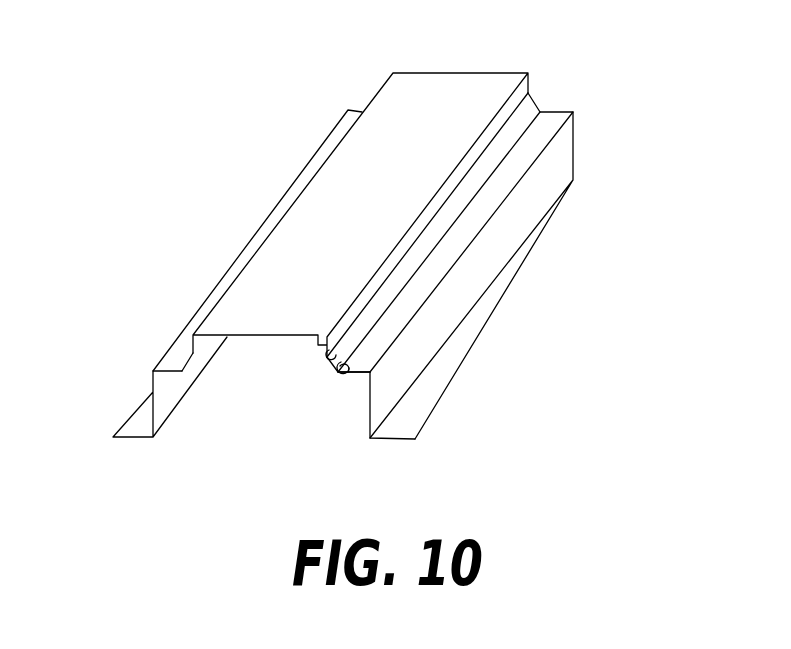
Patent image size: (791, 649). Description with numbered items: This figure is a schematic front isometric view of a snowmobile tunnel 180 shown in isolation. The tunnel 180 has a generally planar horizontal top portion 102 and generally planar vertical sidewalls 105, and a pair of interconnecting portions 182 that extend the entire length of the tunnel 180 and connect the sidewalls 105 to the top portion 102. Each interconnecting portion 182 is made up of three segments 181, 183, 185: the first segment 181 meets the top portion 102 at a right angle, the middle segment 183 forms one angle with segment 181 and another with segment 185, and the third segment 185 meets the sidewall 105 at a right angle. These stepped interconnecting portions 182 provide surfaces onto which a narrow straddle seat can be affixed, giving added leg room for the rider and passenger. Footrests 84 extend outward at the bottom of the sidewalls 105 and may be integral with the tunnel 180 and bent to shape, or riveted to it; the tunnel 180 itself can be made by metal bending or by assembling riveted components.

The top portion 102 is at (443, 95).
The sidewalls 105 is at (558, 156).
The tunnel 180 is at (389, 228).
The first segment 181 is at (422, 221).
The interconnecting portions 182 is at (421, 232).
The second segment 183 is at (415, 257).
The third segment 185 is at (417, 285).
The footrests 84 is at (133, 428).